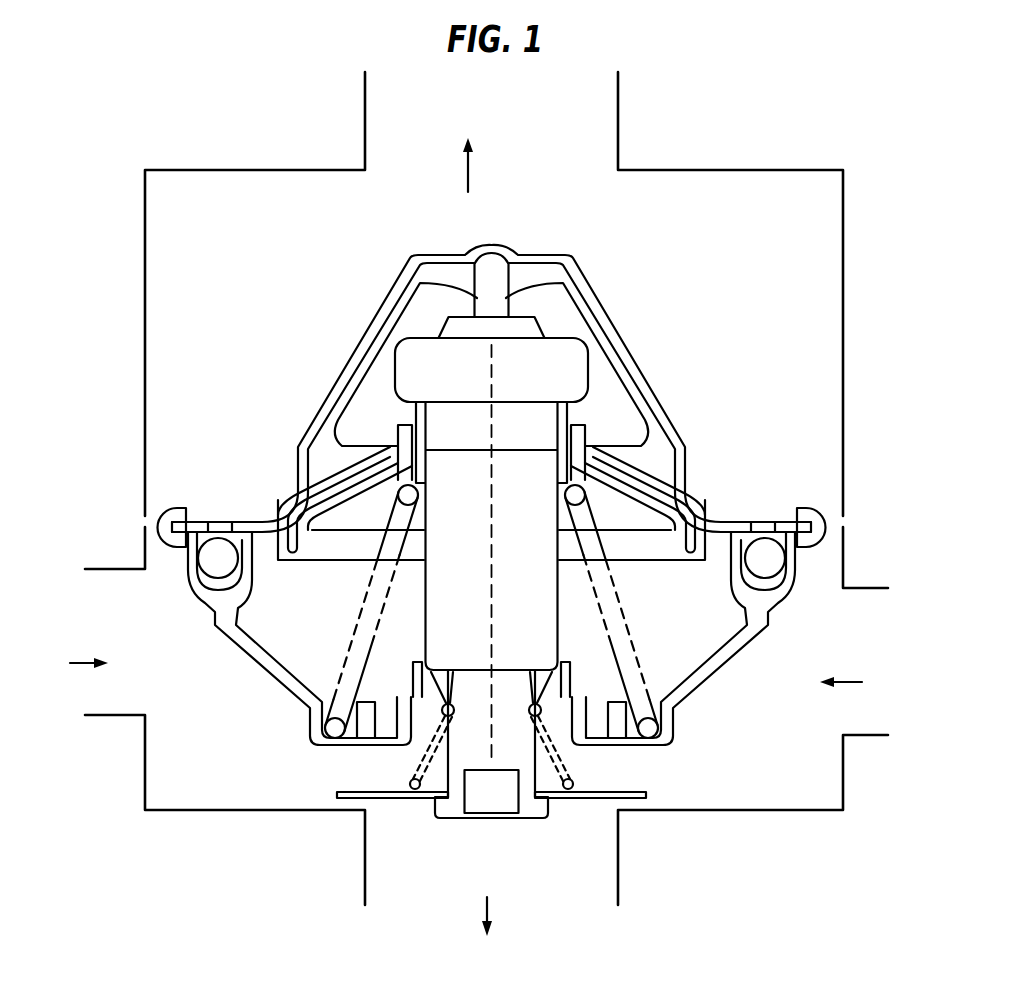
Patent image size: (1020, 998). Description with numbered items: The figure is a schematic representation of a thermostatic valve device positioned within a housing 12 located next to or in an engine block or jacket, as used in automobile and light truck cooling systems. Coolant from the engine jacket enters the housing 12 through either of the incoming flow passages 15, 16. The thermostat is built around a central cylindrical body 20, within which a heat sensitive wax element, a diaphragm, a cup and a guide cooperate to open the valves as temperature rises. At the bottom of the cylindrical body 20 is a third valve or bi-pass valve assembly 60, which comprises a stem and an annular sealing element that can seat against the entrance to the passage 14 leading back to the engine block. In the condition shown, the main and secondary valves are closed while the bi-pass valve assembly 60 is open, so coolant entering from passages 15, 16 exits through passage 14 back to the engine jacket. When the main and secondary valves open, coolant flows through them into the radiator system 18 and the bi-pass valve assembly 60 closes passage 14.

The housing 12 is at (170, 766).
The passage 14 is at (487, 900).
The incoming flow passage 15 is at (63, 663).
The incoming flow passage 16 is at (861, 682).
The radiator system 18 is at (468, 146).
The central cylindrical body 20 is at (426, 632).
The bi-pass valve assembly 60 is at (560, 818).